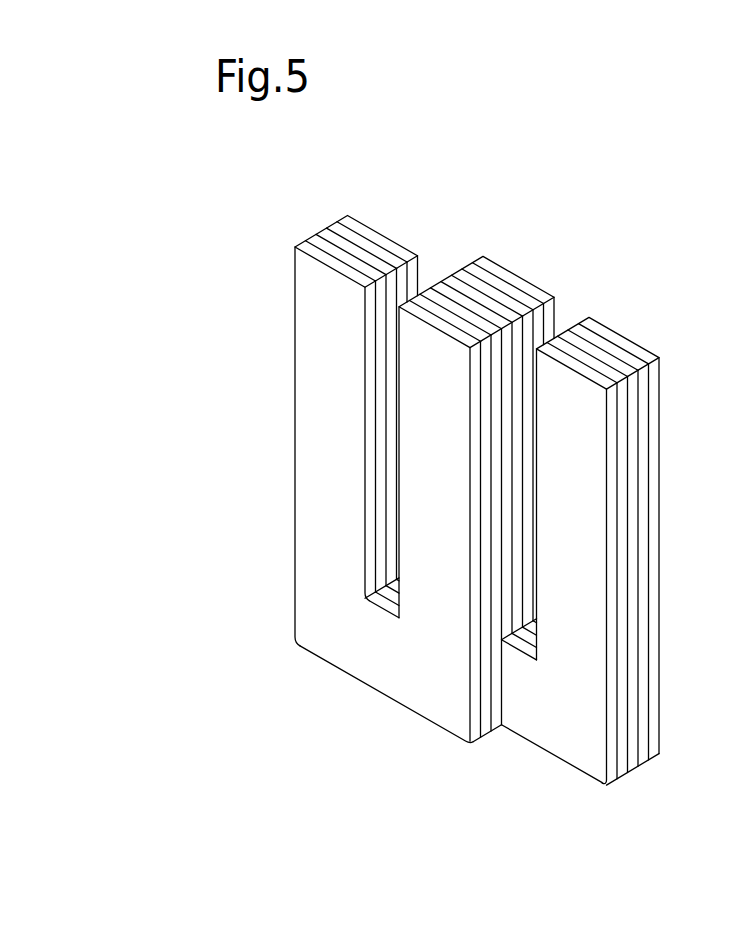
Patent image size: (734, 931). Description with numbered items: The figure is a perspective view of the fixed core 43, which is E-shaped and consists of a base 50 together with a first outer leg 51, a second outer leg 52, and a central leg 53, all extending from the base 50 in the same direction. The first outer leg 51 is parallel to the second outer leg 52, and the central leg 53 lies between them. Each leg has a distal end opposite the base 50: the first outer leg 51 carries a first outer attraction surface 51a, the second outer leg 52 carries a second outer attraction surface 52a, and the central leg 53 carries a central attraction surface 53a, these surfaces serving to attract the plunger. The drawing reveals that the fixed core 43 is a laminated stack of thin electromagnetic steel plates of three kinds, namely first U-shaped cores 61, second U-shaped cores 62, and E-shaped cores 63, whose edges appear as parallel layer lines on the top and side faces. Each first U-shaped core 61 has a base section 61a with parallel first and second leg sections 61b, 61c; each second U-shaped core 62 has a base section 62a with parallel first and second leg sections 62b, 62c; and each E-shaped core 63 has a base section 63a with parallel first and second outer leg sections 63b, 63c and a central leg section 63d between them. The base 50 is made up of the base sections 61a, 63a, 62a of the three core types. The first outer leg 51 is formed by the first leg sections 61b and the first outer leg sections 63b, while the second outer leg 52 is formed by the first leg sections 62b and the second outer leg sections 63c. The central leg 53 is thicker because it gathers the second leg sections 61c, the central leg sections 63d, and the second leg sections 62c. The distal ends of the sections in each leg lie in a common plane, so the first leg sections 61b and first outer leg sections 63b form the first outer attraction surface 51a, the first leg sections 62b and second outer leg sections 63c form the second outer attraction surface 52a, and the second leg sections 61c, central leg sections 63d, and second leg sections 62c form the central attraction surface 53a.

The fixed core 43 is at (581, 201).
The base 50 is at (425, 703).
The first outer leg 51 is at (307, 388).
The first outer attraction surface 51a is at (358, 247).
The second outer leg 52 is at (588, 537).
The second outer attraction surface 52a is at (594, 340).
The central leg 53 is at (415, 497).
The central attraction surface 53a is at (480, 287).
The first U-shaped core 61 is at (397, 315).
The base section of first U-shaped core 61a is at (494, 731).
The first leg section of first U-shaped core 61b is at (316, 232).
The second leg section of first U-shaped core 61c is at (468, 313).
The second U-shaped core 62 is at (634, 442).
The base section of second U-shaped core 62a is at (649, 758).
The first leg section of second U-shaped core 62b is at (634, 348).
The second leg section of second U-shaped core 62c is at (516, 292).
The E-shaped core 63 is at (612, 602).
The base section of E-shaped core 63a is at (610, 781).
The first outer leg section of E-shaped core 63b is at (337, 222).
The second outer leg section of E-shaped core 63c is at (572, 362).
The central leg section of E-shaped core 63d is at (443, 278).